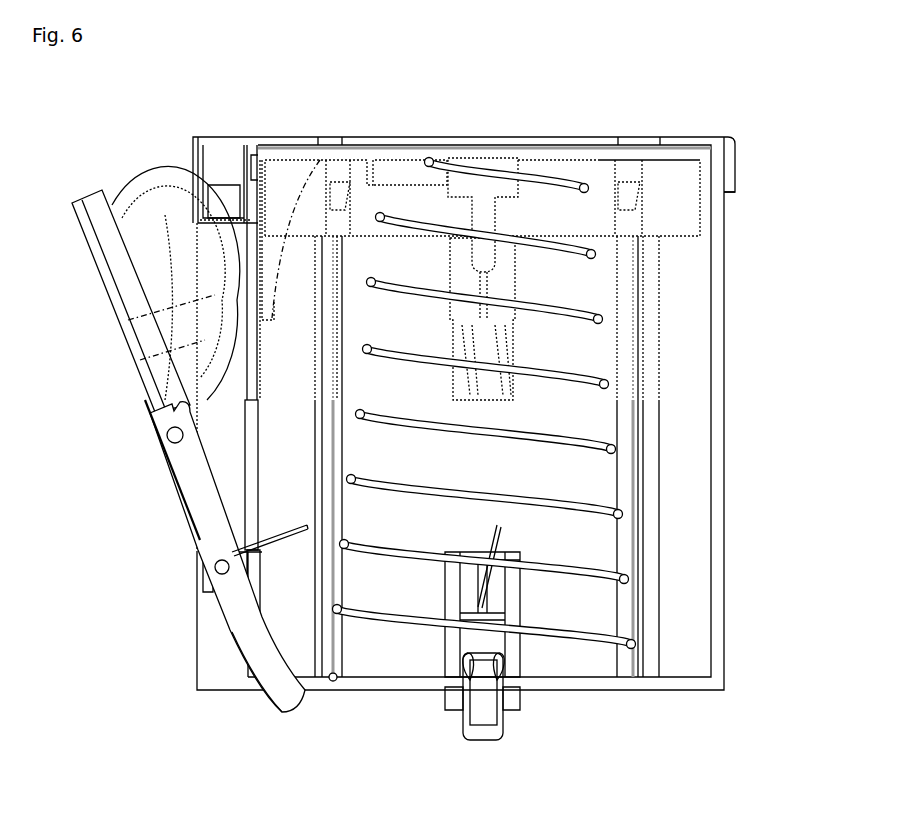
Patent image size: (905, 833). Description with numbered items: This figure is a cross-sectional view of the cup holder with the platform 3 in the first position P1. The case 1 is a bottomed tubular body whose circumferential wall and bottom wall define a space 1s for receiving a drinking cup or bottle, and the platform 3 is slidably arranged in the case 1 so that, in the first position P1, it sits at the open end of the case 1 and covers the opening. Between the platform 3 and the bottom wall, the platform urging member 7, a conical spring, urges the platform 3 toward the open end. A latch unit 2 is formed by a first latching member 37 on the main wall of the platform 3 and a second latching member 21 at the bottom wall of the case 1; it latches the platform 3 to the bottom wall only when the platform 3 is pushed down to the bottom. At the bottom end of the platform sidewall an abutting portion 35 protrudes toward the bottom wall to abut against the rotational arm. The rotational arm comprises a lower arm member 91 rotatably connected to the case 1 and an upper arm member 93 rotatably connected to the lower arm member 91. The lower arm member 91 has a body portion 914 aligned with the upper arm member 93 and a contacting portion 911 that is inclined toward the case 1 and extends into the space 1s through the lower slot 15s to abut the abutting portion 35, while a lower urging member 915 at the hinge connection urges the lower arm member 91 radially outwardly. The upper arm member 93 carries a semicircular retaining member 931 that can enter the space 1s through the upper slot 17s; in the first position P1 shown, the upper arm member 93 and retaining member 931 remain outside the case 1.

The case 1 is at (720, 402).
The space 1s is at (399, 323).
The latch unit 2 is at (449, 459).
The platform 3 is at (670, 180).
The platform urging member 7 is at (557, 309).
The lower slot 15s is at (232, 613).
The upper slot 17s is at (233, 215).
The second latching member 21 is at (480, 707).
The abutting portion 35 is at (291, 240).
The first latching member 37 is at (483, 279).
The lower arm member 91 is at (180, 556).
The body portion 914 is at (200, 520).
The upper arm member 93 is at (105, 238).
The contacting portion 911 is at (255, 648).
The lower urging member 915 is at (256, 545).
The retaining member 931 is at (163, 212).
The first position P1 is at (150, 138).